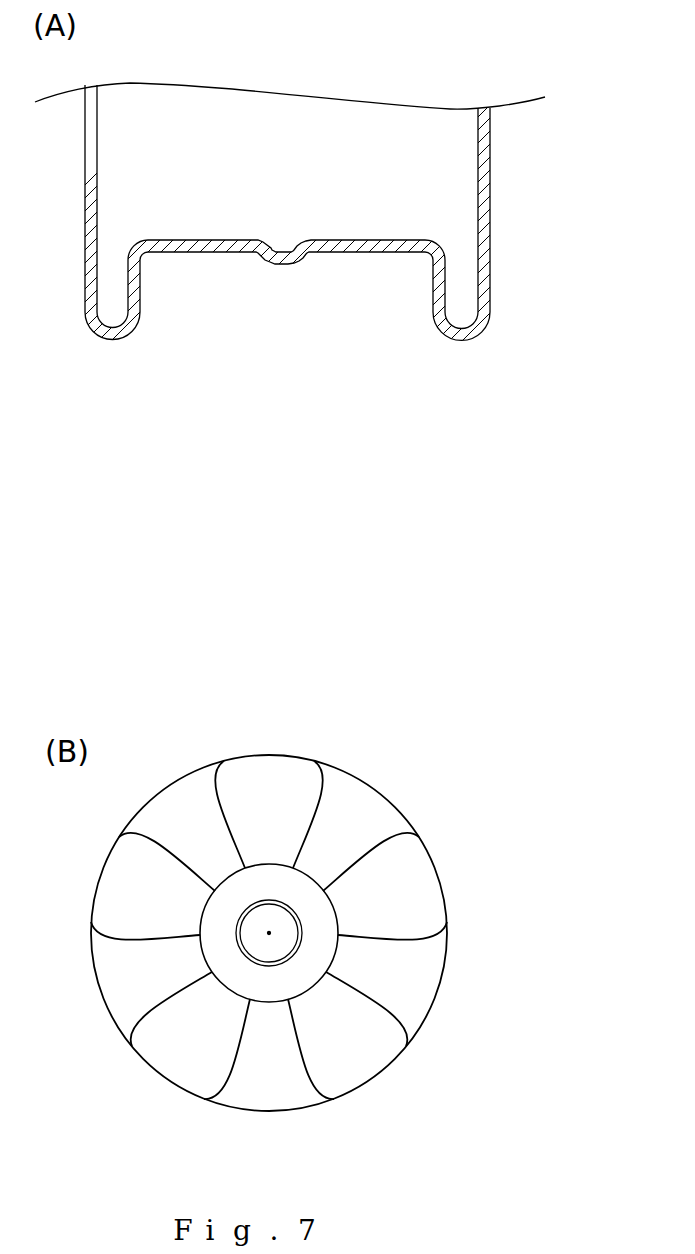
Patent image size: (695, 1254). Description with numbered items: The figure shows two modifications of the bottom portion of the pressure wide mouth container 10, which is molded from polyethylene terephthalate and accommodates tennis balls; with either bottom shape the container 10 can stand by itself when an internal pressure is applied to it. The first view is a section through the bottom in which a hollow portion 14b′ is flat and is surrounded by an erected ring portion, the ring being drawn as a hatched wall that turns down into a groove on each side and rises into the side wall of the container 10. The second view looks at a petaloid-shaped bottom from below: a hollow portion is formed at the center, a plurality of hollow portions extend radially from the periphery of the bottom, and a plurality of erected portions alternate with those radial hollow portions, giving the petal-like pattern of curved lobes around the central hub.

The pressure wide mouth container 10 is at (75, 139).
The hollow portion 14b′ is at (240, 248).